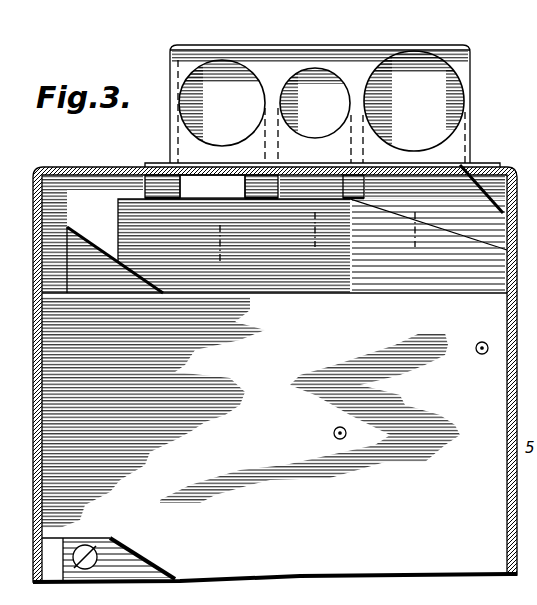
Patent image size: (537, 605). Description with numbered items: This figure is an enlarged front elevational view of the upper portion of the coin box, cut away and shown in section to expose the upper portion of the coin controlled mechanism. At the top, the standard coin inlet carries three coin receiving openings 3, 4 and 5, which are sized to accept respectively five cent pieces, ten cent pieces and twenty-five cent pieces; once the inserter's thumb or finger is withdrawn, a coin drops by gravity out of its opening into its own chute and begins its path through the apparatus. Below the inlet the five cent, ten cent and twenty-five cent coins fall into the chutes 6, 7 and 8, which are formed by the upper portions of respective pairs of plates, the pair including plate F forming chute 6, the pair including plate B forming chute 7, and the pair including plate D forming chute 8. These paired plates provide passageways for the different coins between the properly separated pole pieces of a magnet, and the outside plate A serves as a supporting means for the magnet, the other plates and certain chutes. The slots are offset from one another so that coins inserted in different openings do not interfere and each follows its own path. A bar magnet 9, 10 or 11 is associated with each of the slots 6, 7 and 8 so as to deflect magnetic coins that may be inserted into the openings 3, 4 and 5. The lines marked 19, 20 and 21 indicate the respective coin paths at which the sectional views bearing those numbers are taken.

The coin receiving opening 3 is at (197, 80).
The coin receiving opening 4 is at (336, 84).
The coin receiving opening 5 is at (450, 77).
The chute 6 is at (193, 164).
The chute 7 is at (320, 184).
The chute 8 is at (448, 163).
The bar magnet 9 is at (147, 172).
The bar magnet 10 is at (319, 188).
The bar magnet 11 is at (347, 197).
The nickel chute axis 19 is at (246, 33).
The dime chute axis 20 is at (347, 33).
The quarter chute axis 21 is at (441, 32).
The outside plate A is at (373, 390).
The plate B is at (344, 284).
The plate D is at (487, 228).
The plate F is at (231, 194).